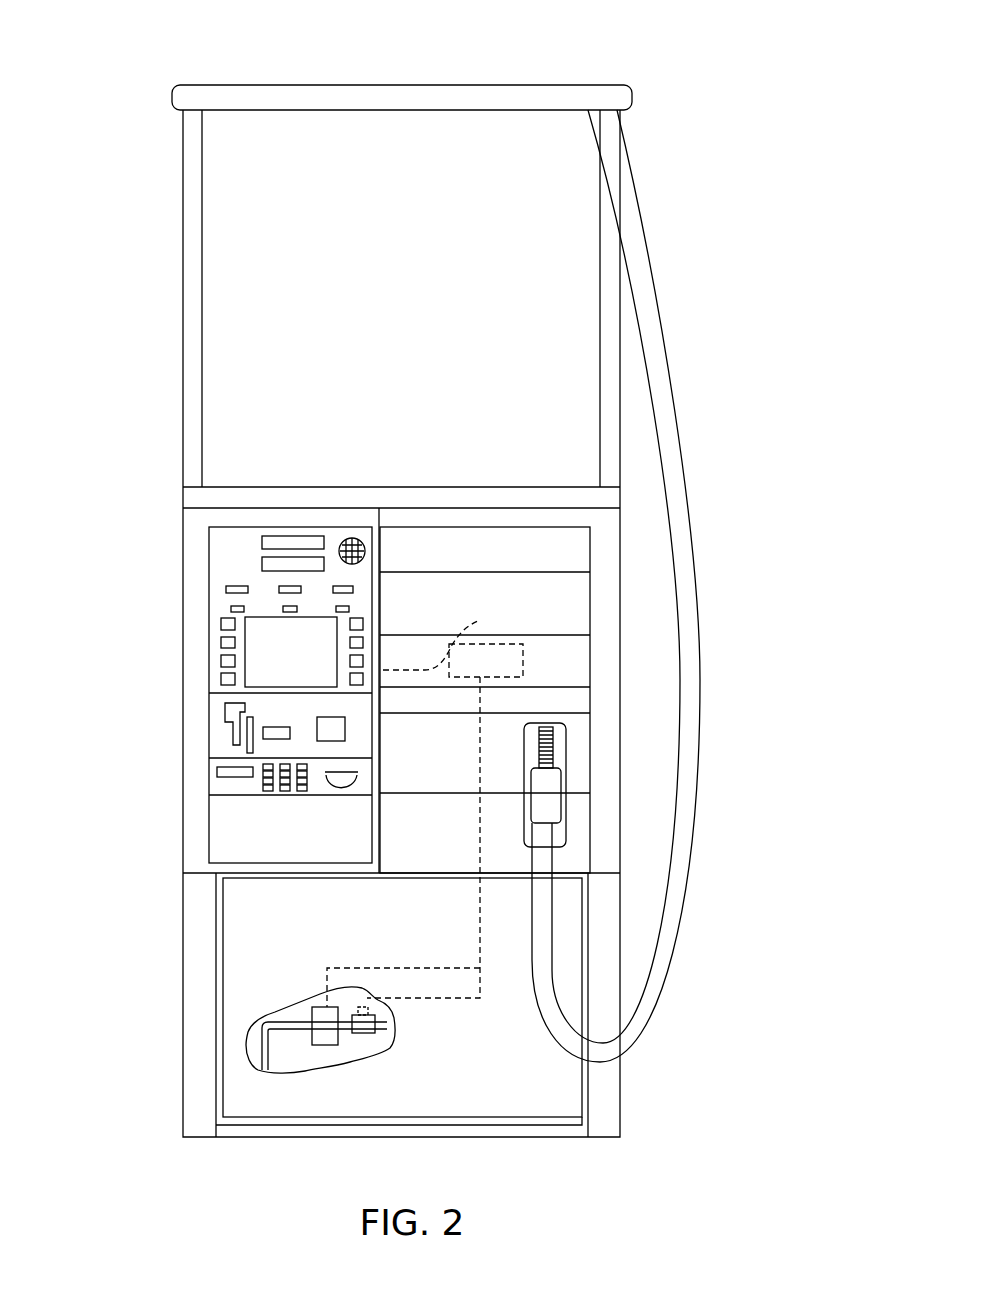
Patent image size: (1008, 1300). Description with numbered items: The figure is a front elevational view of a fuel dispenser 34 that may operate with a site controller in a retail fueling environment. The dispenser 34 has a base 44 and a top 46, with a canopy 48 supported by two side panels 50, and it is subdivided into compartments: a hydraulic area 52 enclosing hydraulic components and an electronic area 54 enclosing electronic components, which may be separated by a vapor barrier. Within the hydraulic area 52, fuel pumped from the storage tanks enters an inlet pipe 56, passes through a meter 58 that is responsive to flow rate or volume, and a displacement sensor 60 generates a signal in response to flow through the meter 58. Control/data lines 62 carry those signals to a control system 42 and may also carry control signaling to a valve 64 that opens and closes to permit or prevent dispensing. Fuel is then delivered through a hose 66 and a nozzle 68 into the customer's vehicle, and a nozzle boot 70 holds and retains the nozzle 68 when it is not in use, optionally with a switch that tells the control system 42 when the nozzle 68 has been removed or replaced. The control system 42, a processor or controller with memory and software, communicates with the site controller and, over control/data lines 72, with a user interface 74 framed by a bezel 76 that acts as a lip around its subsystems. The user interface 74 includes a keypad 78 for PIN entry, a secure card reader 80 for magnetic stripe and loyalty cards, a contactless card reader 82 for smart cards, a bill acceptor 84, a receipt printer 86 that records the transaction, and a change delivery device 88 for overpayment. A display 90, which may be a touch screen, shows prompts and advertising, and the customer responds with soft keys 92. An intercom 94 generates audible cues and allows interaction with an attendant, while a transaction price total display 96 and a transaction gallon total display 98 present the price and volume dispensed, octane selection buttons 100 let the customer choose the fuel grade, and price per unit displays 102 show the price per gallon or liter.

The fuel dispenser 34 is at (648, 67).
The canopy 48 is at (484, 84).
The side panels 50 is at (183, 320).
The top 46 is at (466, 486).
The user interface 74 is at (110, 615).
The bezel 76 is at (198, 523).
The intercom 94 is at (352, 538).
The transaction price total display 96 is at (262, 543).
The transaction gallon total display 98 is at (262, 565).
The octane selection buttons 100 is at (301, 590).
The price per unit displays 102 is at (237, 612).
The display 90 is at (263, 646).
The soft keys 92 is at (222, 660).
The secure card reader 80 is at (228, 715).
The bill acceptor 84 is at (262, 733).
The contactless card reader 82 is at (345, 722).
The receipt printer 86 is at (217, 771).
The keypad 78 is at (262, 784).
The change delivery device 88 is at (356, 781).
The electronic area 54 is at (473, 560).
The control/data lines 72 is at (443, 631).
The control system 42 is at (473, 671).
The control/data lines 62 is at (480, 932).
The nozzle boot 70 is at (566, 836).
The nozzle 68 is at (557, 785).
The hose 66 is at (702, 684).
The hydraulic area 52 is at (473, 1088).
The base 44 is at (533, 1138).
The inlet pipe 56 is at (262, 1043).
The valve 64 is at (326, 1036).
The meter 58 is at (376, 1030).
The displacement sensor 60 is at (370, 1014).